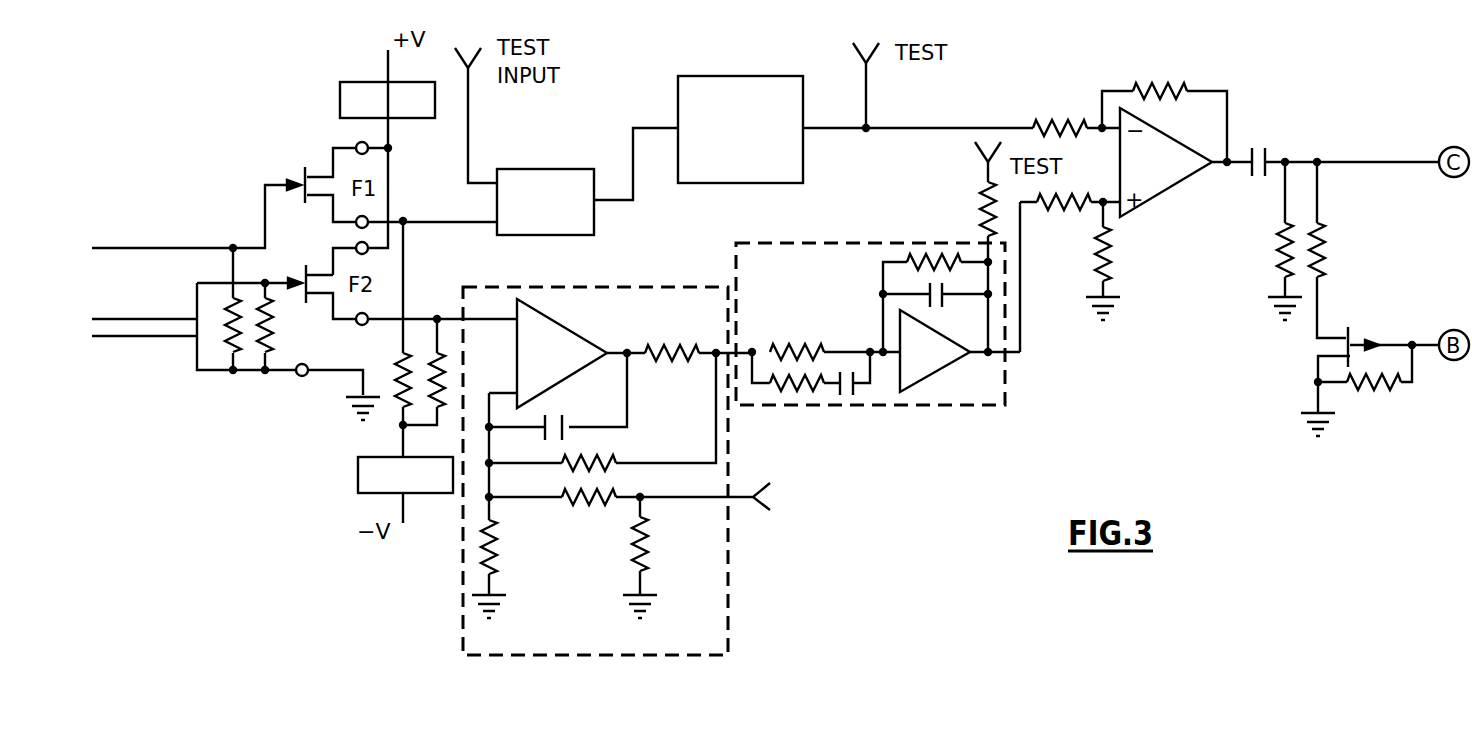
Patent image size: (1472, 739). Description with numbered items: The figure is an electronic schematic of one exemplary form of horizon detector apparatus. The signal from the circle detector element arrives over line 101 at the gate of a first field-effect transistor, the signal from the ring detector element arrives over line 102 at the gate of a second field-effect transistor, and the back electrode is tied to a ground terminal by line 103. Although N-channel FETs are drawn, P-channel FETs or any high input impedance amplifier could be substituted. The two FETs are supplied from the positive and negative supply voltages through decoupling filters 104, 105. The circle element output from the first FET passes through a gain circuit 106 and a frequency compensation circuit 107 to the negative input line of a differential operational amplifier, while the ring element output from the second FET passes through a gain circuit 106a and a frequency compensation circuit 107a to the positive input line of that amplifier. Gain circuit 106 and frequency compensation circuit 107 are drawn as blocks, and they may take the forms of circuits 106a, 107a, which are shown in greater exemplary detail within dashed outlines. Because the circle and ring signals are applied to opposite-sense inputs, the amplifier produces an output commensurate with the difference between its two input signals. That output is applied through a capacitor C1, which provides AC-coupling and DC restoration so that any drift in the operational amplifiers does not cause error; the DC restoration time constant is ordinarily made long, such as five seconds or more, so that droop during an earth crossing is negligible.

The line 101 is at (123, 248).
The line 102 is at (117, 319).
The line 103 is at (172, 338).
The decoupling filter 104 is at (340, 100).
The decoupling filter 105 is at (358, 478).
The gain circuit 106 is at (512, 169).
The gain circuit 106a is at (689, 287).
The frequency compensation circuit 107 is at (697, 76).
The frequency compensation circuit 107a is at (792, 243).
The capacitor C1 is at (1267, 147).